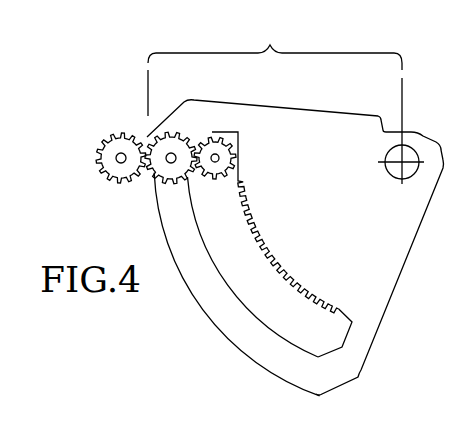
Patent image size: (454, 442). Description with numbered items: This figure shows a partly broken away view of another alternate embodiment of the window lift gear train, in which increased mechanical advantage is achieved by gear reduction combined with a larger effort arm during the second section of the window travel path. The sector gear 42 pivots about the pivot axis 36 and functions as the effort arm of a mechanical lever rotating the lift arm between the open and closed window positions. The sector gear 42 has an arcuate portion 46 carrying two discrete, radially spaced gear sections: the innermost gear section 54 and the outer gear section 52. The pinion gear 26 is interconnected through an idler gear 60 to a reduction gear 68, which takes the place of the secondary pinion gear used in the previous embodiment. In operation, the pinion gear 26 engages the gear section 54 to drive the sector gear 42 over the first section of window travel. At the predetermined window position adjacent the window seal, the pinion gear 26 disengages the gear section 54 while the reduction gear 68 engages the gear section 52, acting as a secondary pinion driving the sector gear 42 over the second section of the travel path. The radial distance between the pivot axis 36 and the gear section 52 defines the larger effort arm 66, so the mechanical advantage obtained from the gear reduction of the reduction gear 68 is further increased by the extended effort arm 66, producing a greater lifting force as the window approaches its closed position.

The pinion gear 26 is at (212, 142).
The pivot axis 36 is at (395, 165).
The sector gear 42 is at (360, 347).
The arcuate portion 46 is at (222, 308).
The gear section 52 is at (150, 140).
The gear section 54 is at (263, 257).
The idler gear 60 is at (167, 177).
The effort arm 66 is at (275, 68).
The reduction gear 68 is at (120, 133).